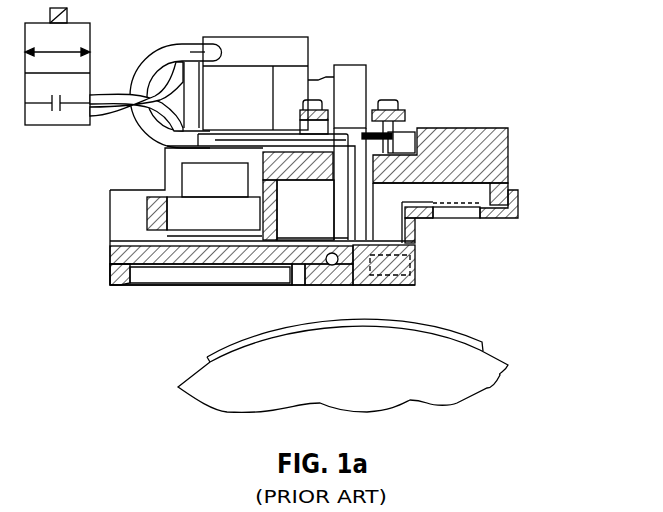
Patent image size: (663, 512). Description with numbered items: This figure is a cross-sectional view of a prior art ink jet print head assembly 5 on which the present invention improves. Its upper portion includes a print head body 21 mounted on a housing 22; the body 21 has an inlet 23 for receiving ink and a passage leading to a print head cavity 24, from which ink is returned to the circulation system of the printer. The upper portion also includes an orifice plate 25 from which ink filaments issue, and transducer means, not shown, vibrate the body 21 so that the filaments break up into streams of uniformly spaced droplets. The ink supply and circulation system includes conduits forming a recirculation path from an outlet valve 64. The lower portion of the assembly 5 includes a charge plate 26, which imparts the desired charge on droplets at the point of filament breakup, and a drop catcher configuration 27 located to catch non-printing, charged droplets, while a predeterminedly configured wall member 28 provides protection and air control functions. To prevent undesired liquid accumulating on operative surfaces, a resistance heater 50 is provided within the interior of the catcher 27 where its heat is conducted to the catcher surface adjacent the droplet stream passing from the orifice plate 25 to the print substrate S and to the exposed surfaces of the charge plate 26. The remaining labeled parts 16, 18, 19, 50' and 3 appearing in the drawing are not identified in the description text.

The print head assembly 5 is at (437, 41).
The outlet valve 64 is at (83, 4).
The charge plate 26 is at (226, 246).
The print head body 21 is at (353, 85).
The inlet 23 is at (343, 135).
The print head cavity 24 is at (356, 226).
The housing 22 is at (490, 136).
The insulating member 16 is at (490, 183).
The orifice plate 25 is at (338, 238).
The retaining bracket 18 is at (505, 193).
The contact bar 19 is at (467, 212).
The wall member 28 is at (415, 284).
The hidden pin 50' is at (421, 256).
The drop catcher configuration 27 is at (123, 288).
The resistance heater 50 is at (312, 281).
The brake pad 3 is at (355, 378).
The print substrate S is at (483, 343).